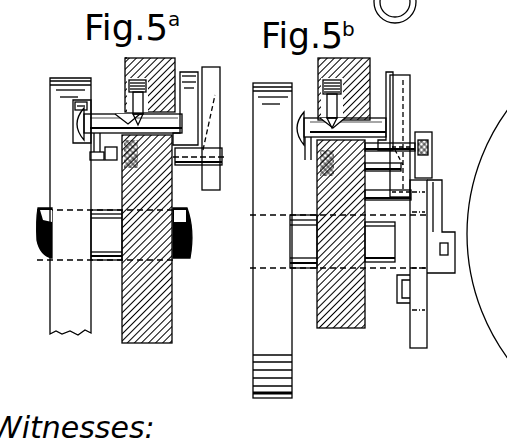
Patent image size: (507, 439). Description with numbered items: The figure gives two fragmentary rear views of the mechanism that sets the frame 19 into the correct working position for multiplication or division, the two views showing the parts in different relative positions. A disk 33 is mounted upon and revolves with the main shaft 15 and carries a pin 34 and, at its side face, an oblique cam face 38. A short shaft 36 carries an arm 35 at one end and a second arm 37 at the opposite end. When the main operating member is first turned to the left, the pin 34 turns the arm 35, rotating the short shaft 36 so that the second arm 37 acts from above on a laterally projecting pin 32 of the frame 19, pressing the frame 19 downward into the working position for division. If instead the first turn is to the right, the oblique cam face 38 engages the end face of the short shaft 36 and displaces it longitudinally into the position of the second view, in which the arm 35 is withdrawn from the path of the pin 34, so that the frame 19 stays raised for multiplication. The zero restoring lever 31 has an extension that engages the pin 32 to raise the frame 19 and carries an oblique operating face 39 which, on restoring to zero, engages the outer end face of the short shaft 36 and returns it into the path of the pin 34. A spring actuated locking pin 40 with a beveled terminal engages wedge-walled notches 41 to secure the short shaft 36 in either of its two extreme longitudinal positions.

In FIG. 5a, the main shaft 15 is at (107, 240).
In FIG. 5b, the main shaft 15 is at (303, 243).
In FIG. 5b, the frame 19 is at (425, 309).
In FIG. 5a, the zero restoring lever 31 is at (213, 140).
In FIG. 5b, the zero restoring lever 31 is at (407, 118).
In FIG. 5b, the pin 32 is at (423, 143).
In FIG. 5a, the disk 33 is at (73, 320).
In FIG. 5b, the disk 33 is at (262, 312).
In FIG. 5a, the pin 34 is at (111, 169).
In FIG. 5a, the arm 35 is at (93, 157).
In FIG. 5b, the arm 35 is at (304, 164).
In FIG. 5a, the short shaft 36 is at (102, 125).
In FIG. 5b, the short shaft 36 is at (372, 127).
In FIG. 5a, the second arm 37 is at (190, 93).
In FIG. 5b, the second arm 37 is at (383, 71).
In FIG. 5a, the oblique cam face 38 is at (87, 107).
In FIG. 5a, the oblique operating face 39 is at (205, 117).
In FIG. 5b, the oblique operating face 39 is at (397, 163).
In FIG. 5a, the spring actuated locking pin 40 is at (177, 68).
In FIG. 5b, the spring actuated locking pin 40 is at (368, 70).
In FIG. 5a, the notches 41 is at (127, 113).
In FIG. 5b, the notches 41 is at (341, 234).